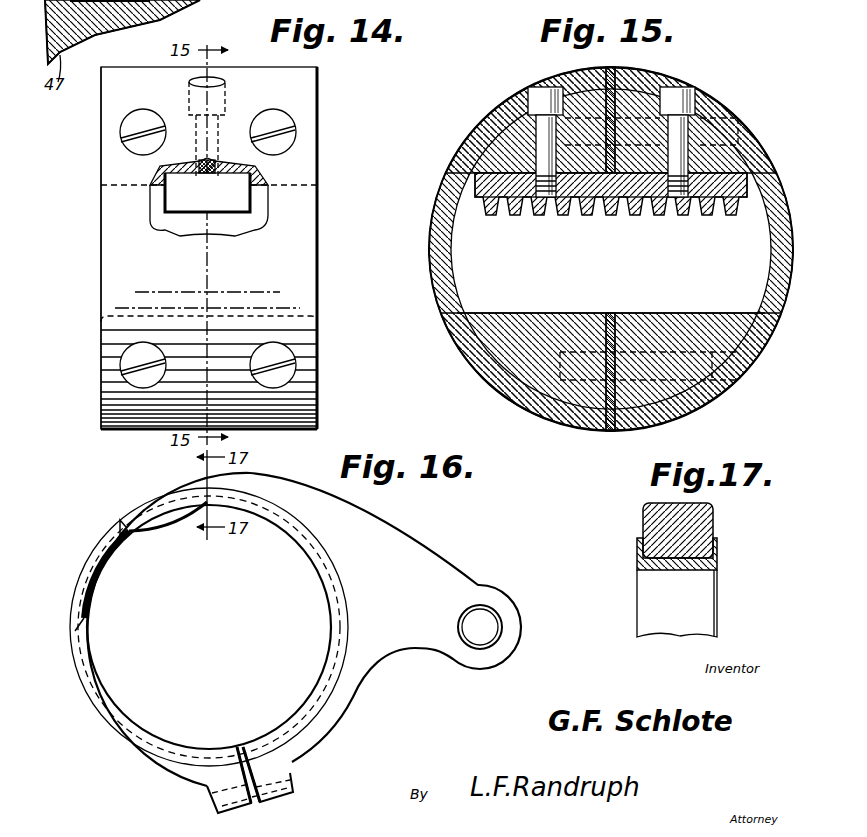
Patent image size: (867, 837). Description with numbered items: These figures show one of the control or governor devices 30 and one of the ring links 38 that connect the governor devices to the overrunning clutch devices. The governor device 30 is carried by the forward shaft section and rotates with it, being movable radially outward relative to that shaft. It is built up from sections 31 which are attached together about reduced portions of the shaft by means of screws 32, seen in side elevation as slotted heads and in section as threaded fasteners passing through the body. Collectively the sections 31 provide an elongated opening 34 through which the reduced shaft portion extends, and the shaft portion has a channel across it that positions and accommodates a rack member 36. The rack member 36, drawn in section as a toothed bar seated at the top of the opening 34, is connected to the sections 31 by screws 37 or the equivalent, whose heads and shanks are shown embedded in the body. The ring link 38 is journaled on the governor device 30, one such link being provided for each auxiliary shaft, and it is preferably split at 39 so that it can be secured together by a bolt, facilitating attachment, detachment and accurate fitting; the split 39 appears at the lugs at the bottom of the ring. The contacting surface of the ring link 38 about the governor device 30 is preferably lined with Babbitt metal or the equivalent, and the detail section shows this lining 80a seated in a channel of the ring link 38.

In FIG. 14, the control or governor device 30 is at (317, 287).
In FIG. 15, the control or governor device 30 is at (472, 360).
In FIG. 14, the sections 31 is at (101, 297).
In FIG. 15, the sections 31 is at (666, 348).
In FIG. 14, the screws 32 is at (143, 118).
In FIG. 15, the screws 32 is at (738, 114).
In FIG. 14, the elongated openings 34 is at (295, 188).
In FIG. 15, the elongated openings 34 is at (678, 273).
In FIG. 14, the rack members 36 is at (235, 202).
In FIG. 15, the rack members 36 is at (637, 222).
In FIG. 14, the screws 37 is at (214, 78).
In FIG. 15, the screws 37 is at (540, 90).
In FIG. 16, the ring links 38 is at (102, 528).
In FIG. 17, the ring links 38 is at (700, 532).
In FIG. 16, the split 39 is at (253, 807).
In FIG. 16, the split clamp ring 80a is at (338, 624).
In FIG. 17, the split clamp ring 80a is at (641, 562).